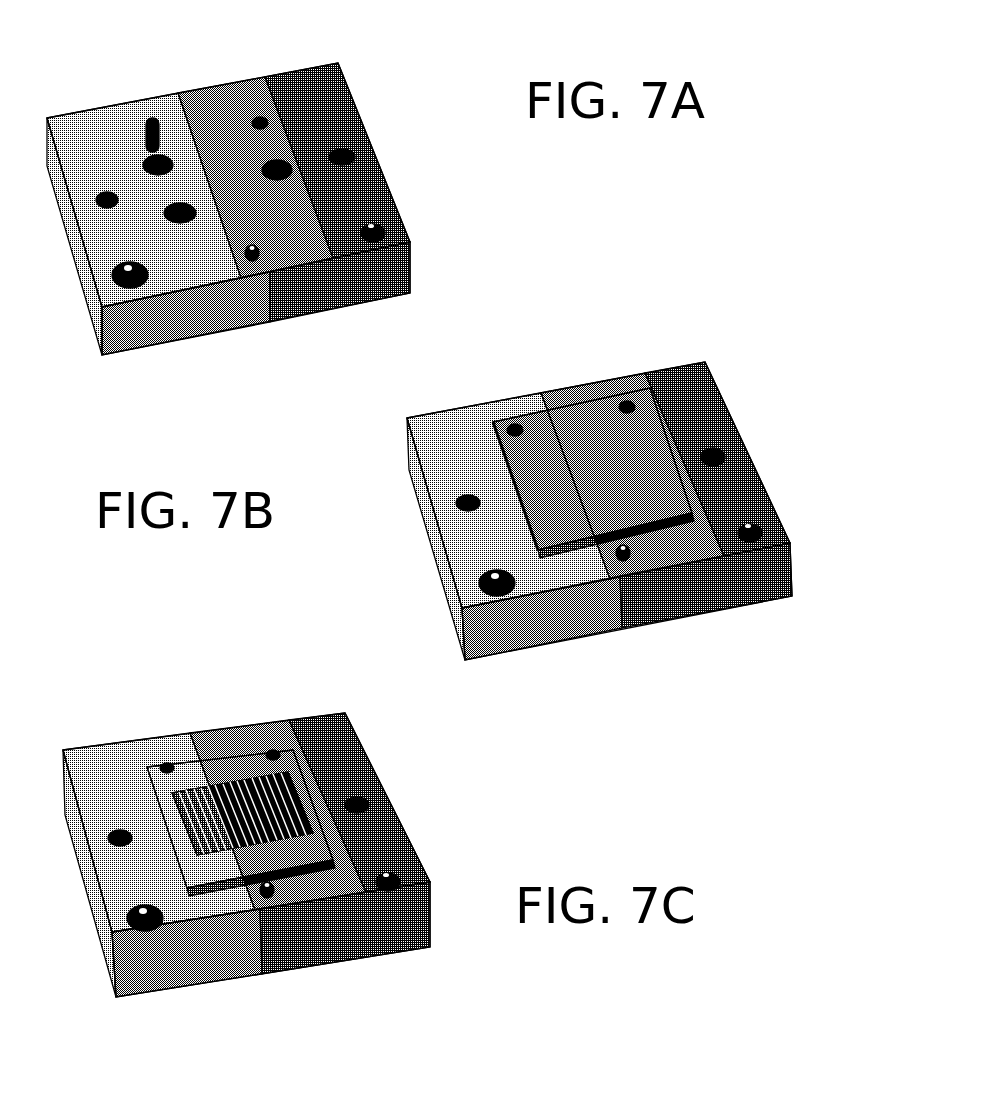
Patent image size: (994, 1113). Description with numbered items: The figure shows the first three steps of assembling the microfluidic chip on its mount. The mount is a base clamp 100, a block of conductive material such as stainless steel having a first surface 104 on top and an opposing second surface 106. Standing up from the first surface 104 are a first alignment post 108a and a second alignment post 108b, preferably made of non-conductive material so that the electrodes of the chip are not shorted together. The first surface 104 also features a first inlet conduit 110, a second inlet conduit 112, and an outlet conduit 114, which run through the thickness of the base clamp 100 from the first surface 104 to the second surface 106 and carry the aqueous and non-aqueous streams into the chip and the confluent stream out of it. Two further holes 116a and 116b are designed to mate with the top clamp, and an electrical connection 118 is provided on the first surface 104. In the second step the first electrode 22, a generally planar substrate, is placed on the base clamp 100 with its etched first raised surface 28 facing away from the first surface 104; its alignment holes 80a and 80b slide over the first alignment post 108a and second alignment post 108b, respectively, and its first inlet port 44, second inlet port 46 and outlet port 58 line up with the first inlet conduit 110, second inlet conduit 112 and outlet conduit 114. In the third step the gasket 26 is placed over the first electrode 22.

In FIG. 7A, the base clamp 100 is at (262, 217).
In FIG. 7B, the base clamp 100 is at (591, 494).
In FIG. 7C, the base clamp 100 is at (340, 752).
In FIG. 7A, the first surface 104 is at (93, 127).
In FIG. 7B, the first surface 104 is at (712, 389).
In FIG. 7A, the second surface 106 is at (137, 342).
In FIG. 7A, the first alignment post 108a is at (157, 120).
In FIG. 7B, the first alignment post 108a is at (514, 424).
In FIG. 7C, the first alignment post 108a is at (165, 763).
In FIG. 7A, the second alignment post 108b is at (261, 117).
In FIG. 7B, the second alignment post 108b is at (627, 400).
In FIG. 7C, the second alignment post 108b is at (274, 750).
In FIG. 7A, the first inlet conduit 110 is at (155, 172).
In FIG. 7A, the second inlet conduit 112 is at (182, 223).
In FIG. 7A, the outlet conduit 114 is at (284, 176).
In FIG. 7A, the hole 116a is at (108, 205).
In FIG. 7B, the hole 116a is at (467, 507).
In FIG. 7C, the hole 116a is at (123, 848).
In FIG. 7A, the hole 116b is at (355, 155).
In FIG. 7B, the hole 116b is at (716, 456).
In FIG. 7C, the hole 116b is at (362, 806).
In FIG. 7A, the electrical connection 118 is at (258, 260).
In FIG. 7B, the electrical connection 118 is at (628, 575).
In FIG. 7C, the electrical connection 118 is at (268, 900).
In FIG. 7B, the first electrode 22 is at (605, 518).
In FIG. 7C, the first electrode 22 is at (220, 763).
In FIG. 7C, the gasket 26 is at (198, 858).
In FIG. 7B, the first raised surface 28 is at (733, 585).
In FIG. 7B, the first inlet port 44 is at (502, 448).
In FIG. 7B, the second inlet port 46 is at (550, 508).
In FIG. 7B, the outlet port 58 is at (655, 456).
In FIG. 7B, the alignment hole 80a is at (518, 426).
In FIG. 7B, the alignment hole 80b is at (632, 402).